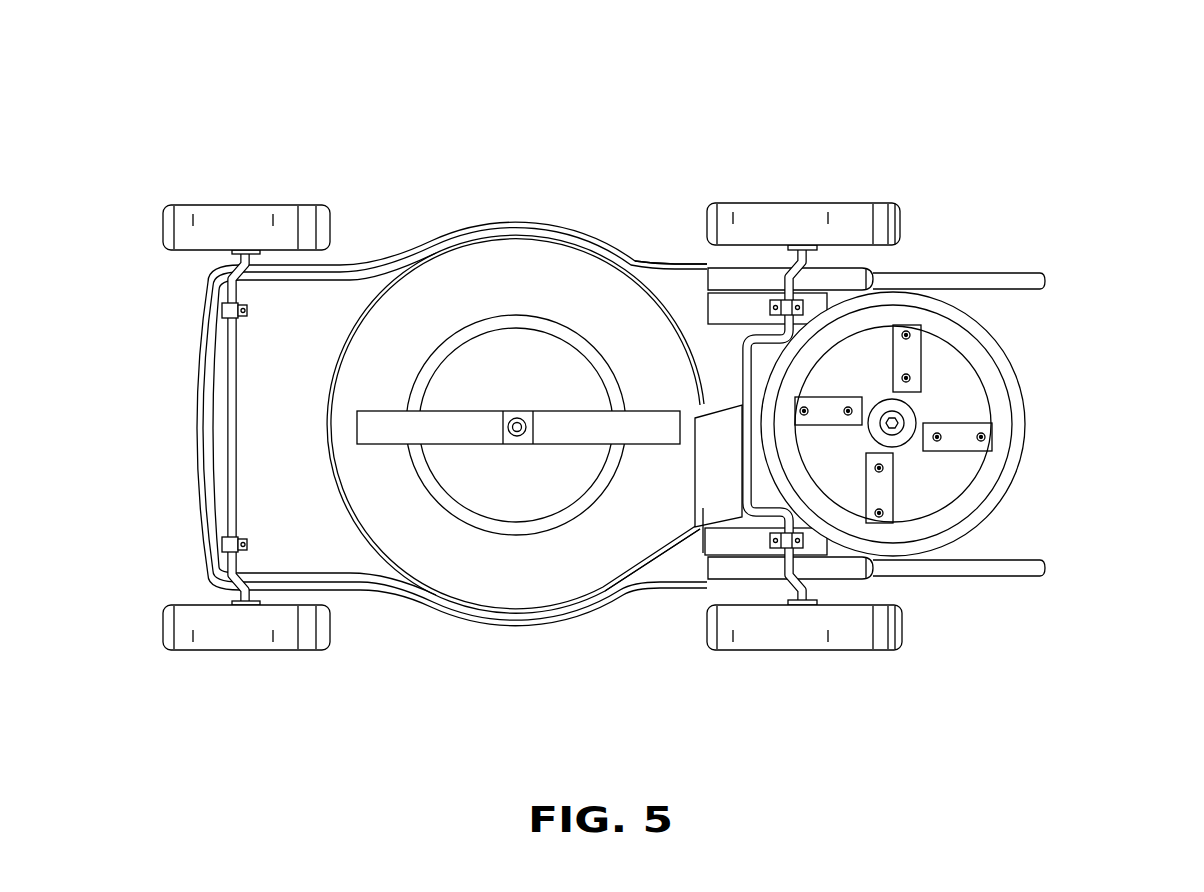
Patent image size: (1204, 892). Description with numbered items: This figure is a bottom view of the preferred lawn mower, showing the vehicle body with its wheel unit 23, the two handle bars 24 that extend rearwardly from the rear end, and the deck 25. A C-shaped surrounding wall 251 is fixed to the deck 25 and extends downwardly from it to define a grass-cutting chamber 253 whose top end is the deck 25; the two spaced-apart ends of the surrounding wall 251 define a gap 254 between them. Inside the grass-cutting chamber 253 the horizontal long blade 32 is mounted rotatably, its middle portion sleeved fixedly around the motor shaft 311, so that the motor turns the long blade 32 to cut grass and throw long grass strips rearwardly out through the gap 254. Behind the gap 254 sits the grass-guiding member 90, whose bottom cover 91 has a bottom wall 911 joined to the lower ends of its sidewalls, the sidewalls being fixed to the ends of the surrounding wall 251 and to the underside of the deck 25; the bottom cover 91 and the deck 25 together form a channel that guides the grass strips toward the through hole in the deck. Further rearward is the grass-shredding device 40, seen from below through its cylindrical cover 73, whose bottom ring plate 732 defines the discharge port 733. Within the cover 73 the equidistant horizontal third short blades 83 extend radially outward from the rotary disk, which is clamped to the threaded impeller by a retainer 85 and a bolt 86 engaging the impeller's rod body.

The wheel unit 23 is at (237, 205).
The handle bars 24 is at (996, 272).
The deck 25 is at (355, 290).
The C-shaped surrounding wall 251 is at (628, 268).
The grass-cutting chamber 253 is at (522, 236).
The gap 254 is at (708, 413).
The horizontal long blade 32 is at (456, 420).
The motor shaft 311 is at (514, 420).
The grass-guiding member 90 is at (727, 382).
The bottom wall 911 is at (703, 530).
The bottom cover 91 is at (746, 524).
The grass-shredding device 40 is at (973, 422).
The cylindrical cover 73 is at (1013, 373).
The bottom ring plate 732 is at (905, 416).
The discharge port 733 is at (986, 468).
The bolt 86 is at (985, 437).
The retainer 85 is at (903, 436).
The third short blades 83 is at (893, 497).